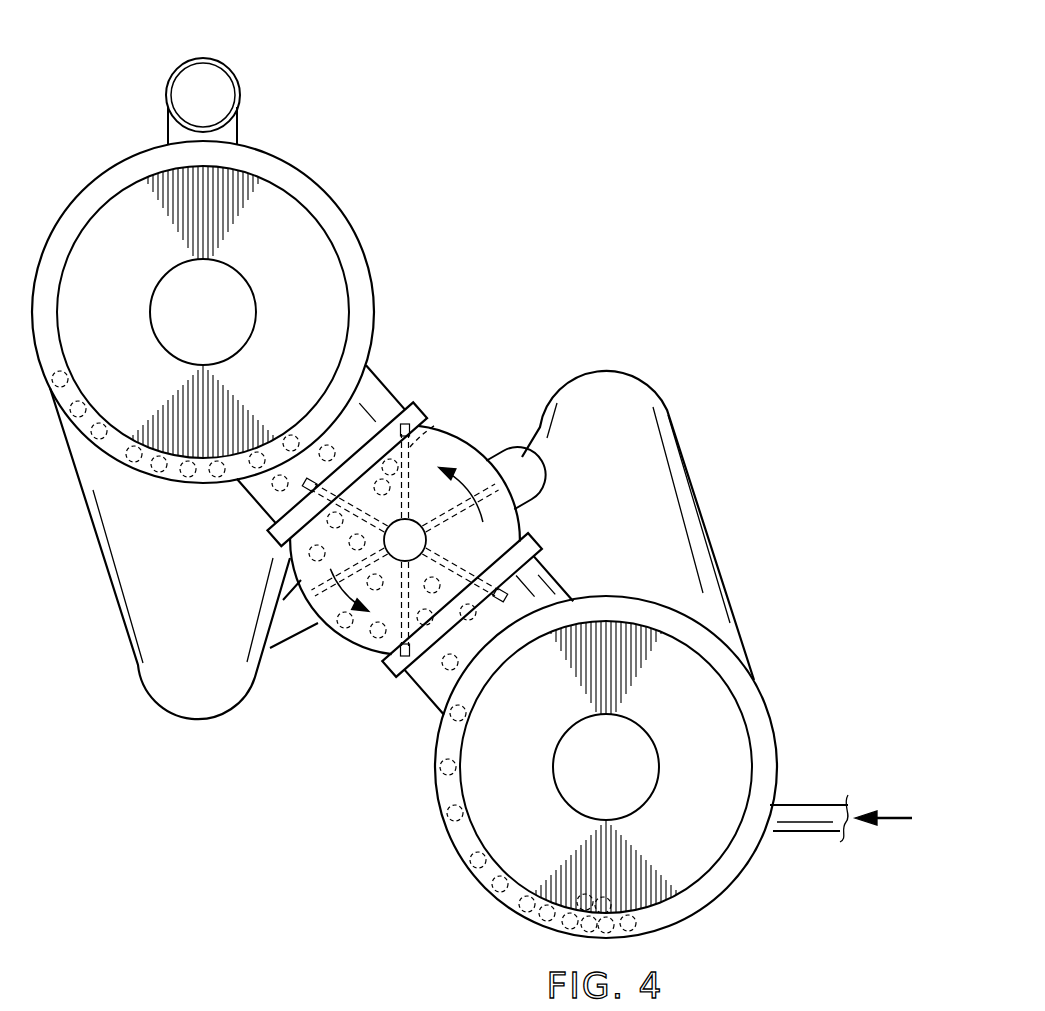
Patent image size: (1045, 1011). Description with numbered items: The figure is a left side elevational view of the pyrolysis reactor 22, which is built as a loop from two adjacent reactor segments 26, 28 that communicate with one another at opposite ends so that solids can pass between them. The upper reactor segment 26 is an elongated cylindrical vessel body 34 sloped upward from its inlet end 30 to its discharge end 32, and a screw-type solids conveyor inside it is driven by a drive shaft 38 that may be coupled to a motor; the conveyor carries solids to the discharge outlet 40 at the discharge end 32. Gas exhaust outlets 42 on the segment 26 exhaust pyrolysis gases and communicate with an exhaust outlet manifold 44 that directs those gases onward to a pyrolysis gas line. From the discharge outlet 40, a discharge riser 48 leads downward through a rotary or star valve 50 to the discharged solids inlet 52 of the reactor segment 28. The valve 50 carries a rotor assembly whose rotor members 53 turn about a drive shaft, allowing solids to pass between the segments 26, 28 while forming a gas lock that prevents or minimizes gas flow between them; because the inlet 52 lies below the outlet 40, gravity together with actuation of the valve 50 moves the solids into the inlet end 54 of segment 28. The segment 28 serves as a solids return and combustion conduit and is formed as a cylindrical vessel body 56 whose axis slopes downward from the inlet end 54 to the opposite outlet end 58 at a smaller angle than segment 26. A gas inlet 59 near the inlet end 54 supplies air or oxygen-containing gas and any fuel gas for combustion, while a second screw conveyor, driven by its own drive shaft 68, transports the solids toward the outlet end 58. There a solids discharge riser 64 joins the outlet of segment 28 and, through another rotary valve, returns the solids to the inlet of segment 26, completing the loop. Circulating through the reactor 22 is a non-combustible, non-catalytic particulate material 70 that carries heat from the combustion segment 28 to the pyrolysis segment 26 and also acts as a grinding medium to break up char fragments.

The pyrolysis reactor 22 is at (562, 172).
The reactor segment 26 is at (320, 182).
The reactor segment 28 is at (647, 597).
The inlet end 30 is at (133, 652).
The discharge end 32 is at (85, 465).
The vessel body 34 is at (280, 157).
The drive shaft 38 is at (230, 262).
The discharge outlet 40 is at (240, 480).
The gas exhaust outlet 42 is at (165, 128).
The exhaust outlet manifold 44 is at (203, 58).
The discharge riser 48 is at (383, 385).
The rotary valve 50 is at (362, 652).
The discharged solids inlet 52 is at (568, 597).
The rotor member 53 is at (436, 425).
The inlet end 54 is at (757, 675).
The vessel body 56 is at (508, 907).
The outlet end 58 is at (683, 442).
The gas inlet 59 is at (802, 832).
The solids discharge riser 64 is at (513, 462).
The drive shaft 68 is at (573, 810).
The particulate material 70 is at (472, 867).